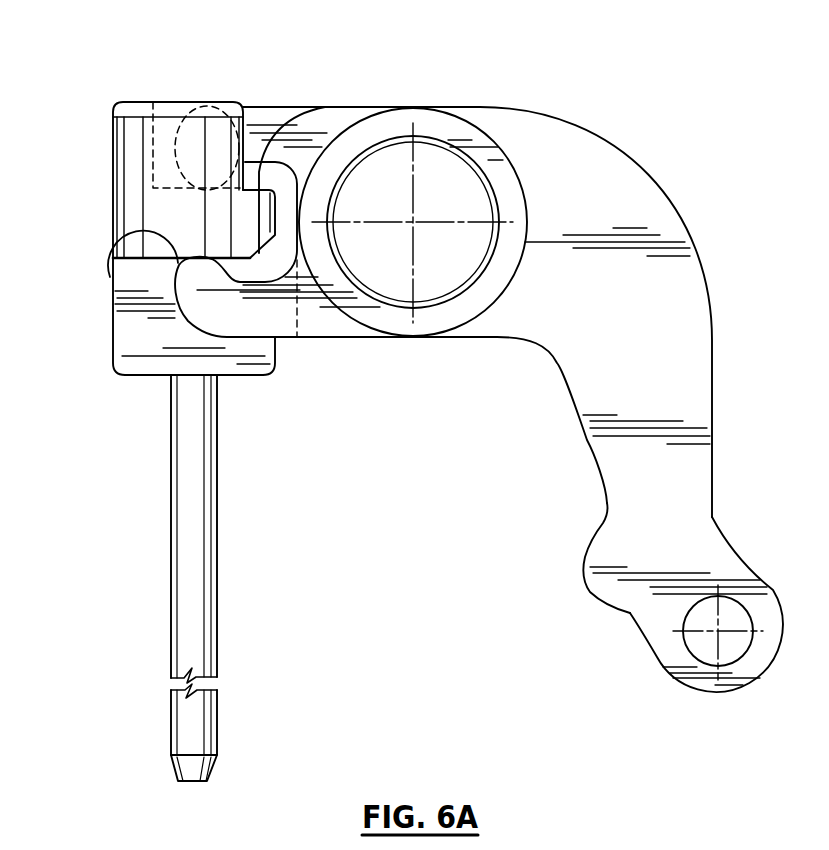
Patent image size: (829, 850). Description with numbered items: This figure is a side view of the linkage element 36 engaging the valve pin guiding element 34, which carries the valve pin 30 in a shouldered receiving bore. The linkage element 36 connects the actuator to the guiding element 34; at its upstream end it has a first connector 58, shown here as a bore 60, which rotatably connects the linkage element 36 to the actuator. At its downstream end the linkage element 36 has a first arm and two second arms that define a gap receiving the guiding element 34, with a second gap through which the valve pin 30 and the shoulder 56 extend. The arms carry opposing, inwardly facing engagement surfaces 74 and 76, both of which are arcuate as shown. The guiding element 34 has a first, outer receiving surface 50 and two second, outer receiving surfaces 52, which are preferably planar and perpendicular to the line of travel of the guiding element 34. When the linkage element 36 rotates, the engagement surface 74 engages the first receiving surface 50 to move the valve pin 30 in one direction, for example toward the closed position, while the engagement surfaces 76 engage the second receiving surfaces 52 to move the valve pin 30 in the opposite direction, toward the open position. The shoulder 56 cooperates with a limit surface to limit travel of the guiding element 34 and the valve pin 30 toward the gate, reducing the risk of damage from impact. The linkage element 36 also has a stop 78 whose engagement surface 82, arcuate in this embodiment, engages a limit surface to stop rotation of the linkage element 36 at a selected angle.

The valve pin 30 is at (195, 550).
The guiding element 34 is at (189, 102).
The linkage element 36 is at (562, 138).
The first receiving surface 50 is at (325, 107).
The second receiving surfaces 52 is at (110, 277).
The shoulder 56 is at (238, 376).
The first connector 58 is at (735, 612).
The bore 60 is at (733, 650).
The engagement surface 74 is at (150, 184).
The engagement surfaces 76 is at (128, 250).
The stop 78 is at (602, 589).
The engagement surface 82 is at (583, 562).